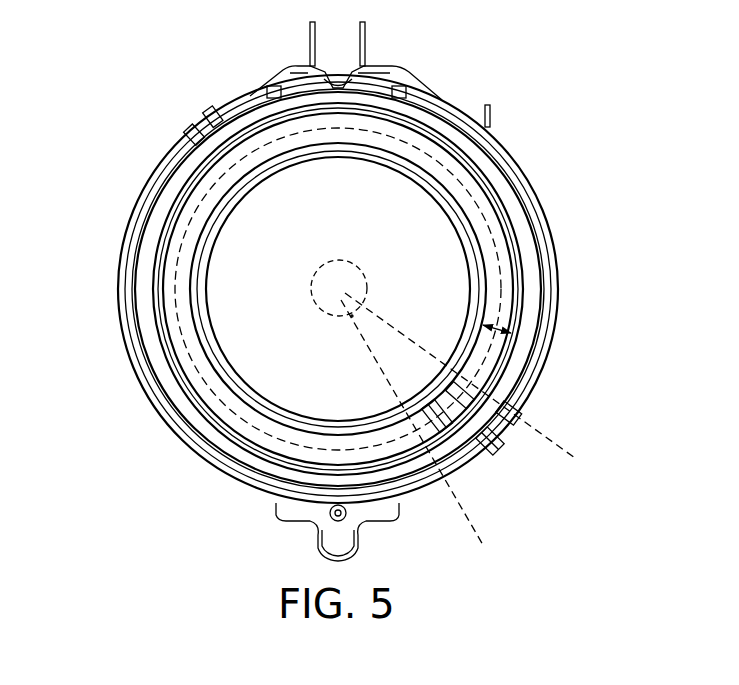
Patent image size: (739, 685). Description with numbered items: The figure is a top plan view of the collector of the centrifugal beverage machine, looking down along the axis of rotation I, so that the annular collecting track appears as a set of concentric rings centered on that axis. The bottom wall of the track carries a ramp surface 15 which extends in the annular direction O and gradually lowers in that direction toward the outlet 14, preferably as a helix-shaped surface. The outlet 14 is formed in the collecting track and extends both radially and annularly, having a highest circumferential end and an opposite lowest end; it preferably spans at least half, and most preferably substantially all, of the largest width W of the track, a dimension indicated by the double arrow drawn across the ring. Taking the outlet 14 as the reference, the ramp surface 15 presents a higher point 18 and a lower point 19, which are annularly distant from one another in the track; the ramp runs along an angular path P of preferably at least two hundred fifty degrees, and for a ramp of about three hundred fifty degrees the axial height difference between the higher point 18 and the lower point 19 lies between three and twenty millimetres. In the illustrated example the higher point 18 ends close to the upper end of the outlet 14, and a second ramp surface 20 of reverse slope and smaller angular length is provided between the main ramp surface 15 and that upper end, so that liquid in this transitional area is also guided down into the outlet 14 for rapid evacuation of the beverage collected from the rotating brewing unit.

The outlet 14 is at (508, 402).
The ramp surface 15 is at (487, 204).
The higher point 18 is at (417, 423).
The lower point 19 is at (464, 397).
The second ramp surface 20 is at (497, 450).
The annular direction O is at (168, 305).
The largest width W is at (500, 327).
The angular path P is at (330, 257).
The axis of rotation I is at (353, 316).